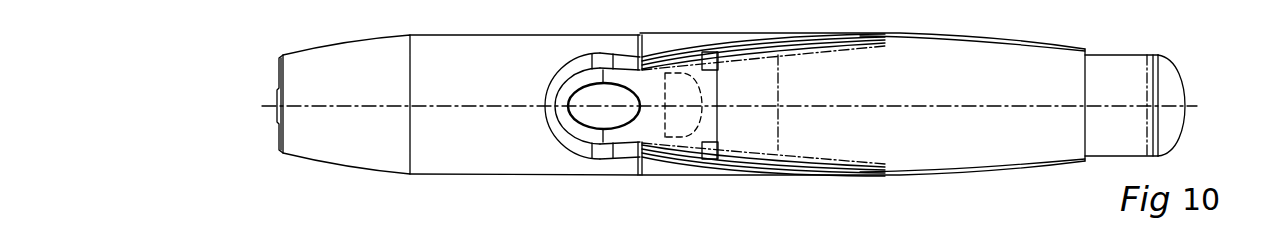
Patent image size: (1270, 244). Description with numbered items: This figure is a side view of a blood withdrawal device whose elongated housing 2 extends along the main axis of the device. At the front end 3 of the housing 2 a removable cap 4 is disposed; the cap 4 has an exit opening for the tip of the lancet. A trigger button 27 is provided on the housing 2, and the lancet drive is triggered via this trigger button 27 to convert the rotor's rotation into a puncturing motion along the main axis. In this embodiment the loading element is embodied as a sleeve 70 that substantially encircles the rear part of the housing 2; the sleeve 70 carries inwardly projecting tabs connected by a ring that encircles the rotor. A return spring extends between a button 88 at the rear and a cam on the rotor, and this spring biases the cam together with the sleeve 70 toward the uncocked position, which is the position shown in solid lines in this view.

The housing 2 is at (746, 181).
The front end 3 is at (278, 132).
The removable cap 4 is at (360, 150).
The trigger button 27 is at (593, 115).
The sleeve 70 is at (977, 78).
The button 88 is at (1167, 80).